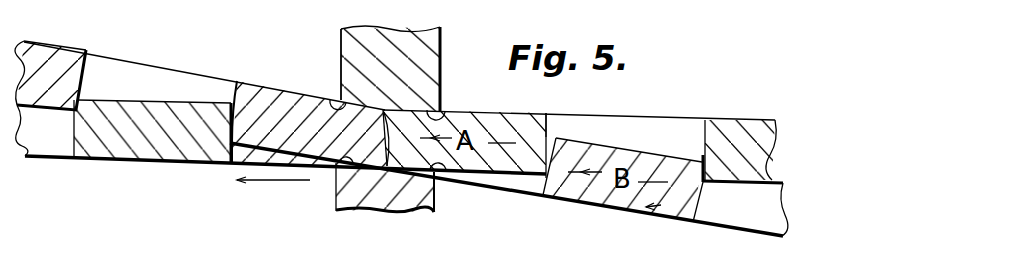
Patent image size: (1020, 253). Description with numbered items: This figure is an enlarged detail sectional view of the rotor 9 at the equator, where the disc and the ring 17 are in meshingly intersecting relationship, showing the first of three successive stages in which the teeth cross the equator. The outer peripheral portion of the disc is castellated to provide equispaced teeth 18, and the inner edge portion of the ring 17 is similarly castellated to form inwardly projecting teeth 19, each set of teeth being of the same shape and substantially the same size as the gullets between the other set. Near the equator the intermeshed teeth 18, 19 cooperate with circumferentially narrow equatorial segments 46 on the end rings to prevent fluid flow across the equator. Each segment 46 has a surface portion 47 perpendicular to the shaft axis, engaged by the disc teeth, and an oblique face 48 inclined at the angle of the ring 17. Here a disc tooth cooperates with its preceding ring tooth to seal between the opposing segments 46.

The rotor 9 is at (625, 132).
The ring 17 is at (637, 213).
The teeth 18 is at (185, 153).
The teeth 19 is at (253, 96).
The equatorial segments 46 is at (441, 47).
The surface portion 47 is at (441, 109).
The surface portion 48 is at (331, 99).